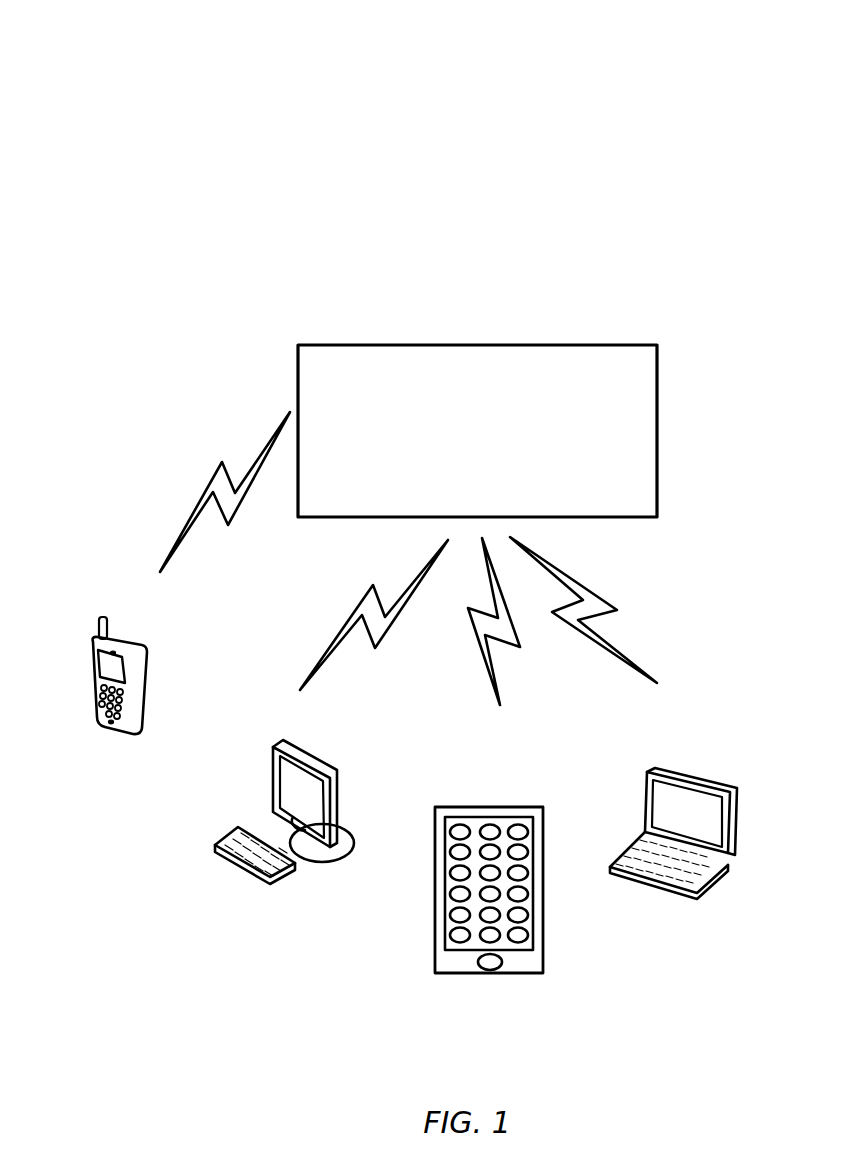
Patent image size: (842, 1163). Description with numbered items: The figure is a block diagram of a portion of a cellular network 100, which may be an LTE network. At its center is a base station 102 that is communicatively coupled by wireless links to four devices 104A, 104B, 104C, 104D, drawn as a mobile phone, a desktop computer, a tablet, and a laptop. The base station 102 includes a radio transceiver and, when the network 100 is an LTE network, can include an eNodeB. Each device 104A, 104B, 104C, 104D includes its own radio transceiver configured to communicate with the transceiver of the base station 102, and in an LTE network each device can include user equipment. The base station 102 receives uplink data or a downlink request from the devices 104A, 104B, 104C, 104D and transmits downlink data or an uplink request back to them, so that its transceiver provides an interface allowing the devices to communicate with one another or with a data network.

The cellular network 100 is at (97, 76).
The base station 102 is at (493, 360).
The device 104A is at (132, 655).
The device 104B is at (333, 774).
The device 104C is at (502, 812).
The device 104D is at (702, 790).